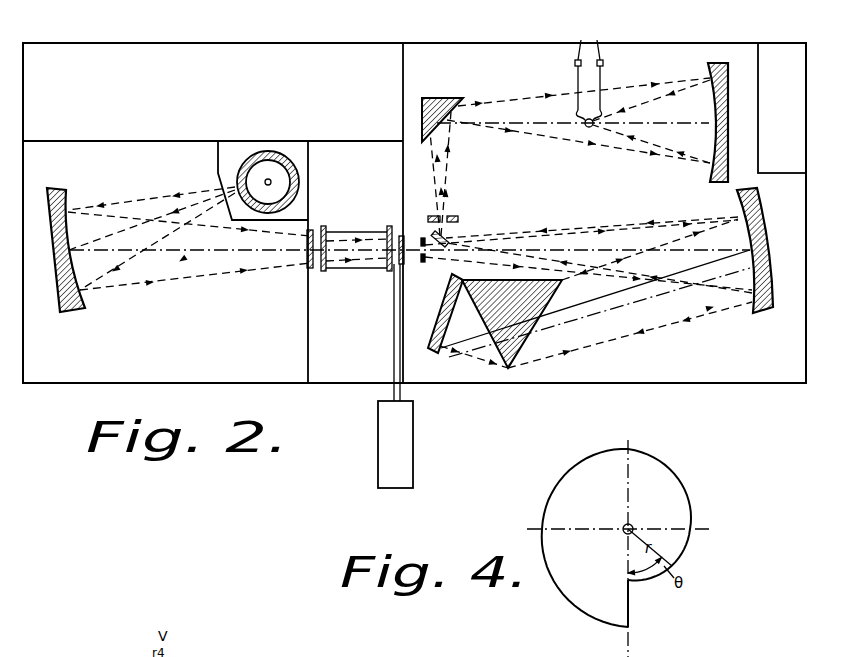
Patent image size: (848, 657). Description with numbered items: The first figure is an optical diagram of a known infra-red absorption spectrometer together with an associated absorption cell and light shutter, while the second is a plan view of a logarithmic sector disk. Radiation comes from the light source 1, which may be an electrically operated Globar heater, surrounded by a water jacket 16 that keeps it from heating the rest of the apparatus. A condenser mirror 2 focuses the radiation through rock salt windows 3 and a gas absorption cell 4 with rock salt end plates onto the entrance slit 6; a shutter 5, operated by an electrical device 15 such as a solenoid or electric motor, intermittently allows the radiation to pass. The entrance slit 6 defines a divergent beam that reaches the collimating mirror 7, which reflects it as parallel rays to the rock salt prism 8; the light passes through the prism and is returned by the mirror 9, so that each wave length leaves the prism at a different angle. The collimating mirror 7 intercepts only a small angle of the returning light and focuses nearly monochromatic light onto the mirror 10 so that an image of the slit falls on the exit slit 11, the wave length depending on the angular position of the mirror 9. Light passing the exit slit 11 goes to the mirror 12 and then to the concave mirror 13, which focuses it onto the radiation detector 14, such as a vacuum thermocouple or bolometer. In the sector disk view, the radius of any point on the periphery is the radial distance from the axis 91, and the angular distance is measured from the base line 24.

In FIG. 2, the light source 1 is at (272, 181).
In FIG. 2, the condenser mirror 2 is at (78, 312).
In FIG. 2, the rock salt windows 3 is at (311, 268).
In FIG. 2, the gas absorption cell 4 is at (356, 232).
In FIG. 2, the shutter 5 is at (394, 292).
In FIG. 2, the entrance slit 6 is at (424, 262).
In FIG. 2, the collimating mirror 7 is at (765, 313).
In FIG. 2, the rock salt prism 8 is at (533, 333).
In FIG. 2, the mirror 9 is at (432, 352).
In FIG. 2, the mirror 10 is at (438, 238).
In FIG. 2, the exit slit 11 is at (458, 215).
In FIG. 2, the mirror 12 is at (437, 97).
In FIG. 2, the concave mirror 13 is at (716, 182).
In FIG. 2, the radiation detector 14 is at (588, 127).
In FIG. 2, the electrical device 15 is at (413, 445).
In FIG. 2, the water jacket 16 is at (296, 195).
In FIG. 4, the axis 91 is at (633, 524).
In FIG. 4, the base line 24 is at (632, 643).